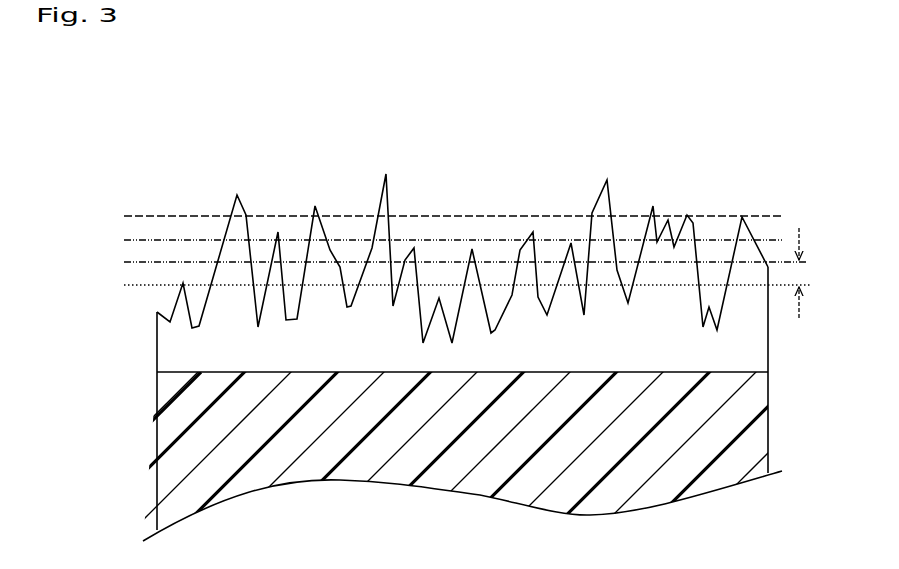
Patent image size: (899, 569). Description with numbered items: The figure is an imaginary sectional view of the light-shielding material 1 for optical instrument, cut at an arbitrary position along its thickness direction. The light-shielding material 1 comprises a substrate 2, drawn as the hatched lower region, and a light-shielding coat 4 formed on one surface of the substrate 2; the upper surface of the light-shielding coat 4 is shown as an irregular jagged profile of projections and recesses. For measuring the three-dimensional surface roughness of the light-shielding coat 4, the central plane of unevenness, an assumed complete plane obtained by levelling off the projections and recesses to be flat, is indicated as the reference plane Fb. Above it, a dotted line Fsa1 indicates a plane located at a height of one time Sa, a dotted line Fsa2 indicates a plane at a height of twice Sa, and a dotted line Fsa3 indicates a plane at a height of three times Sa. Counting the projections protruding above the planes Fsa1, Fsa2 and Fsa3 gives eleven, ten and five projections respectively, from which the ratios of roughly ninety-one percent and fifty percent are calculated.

The light-shielding material for optical instrument 1 is at (477, 162).
The substrate 2 is at (755, 439).
The light-shielding coat 4 is at (756, 357).
The plane located at a height of three times Sa Fsa3 is at (121, 215).
The plane located at a height of twice Sa Fsa2 is at (121, 240).
The plane located at a height of one time Sa Fsa1 is at (121, 262).
The reference plane Fb is at (121, 286).